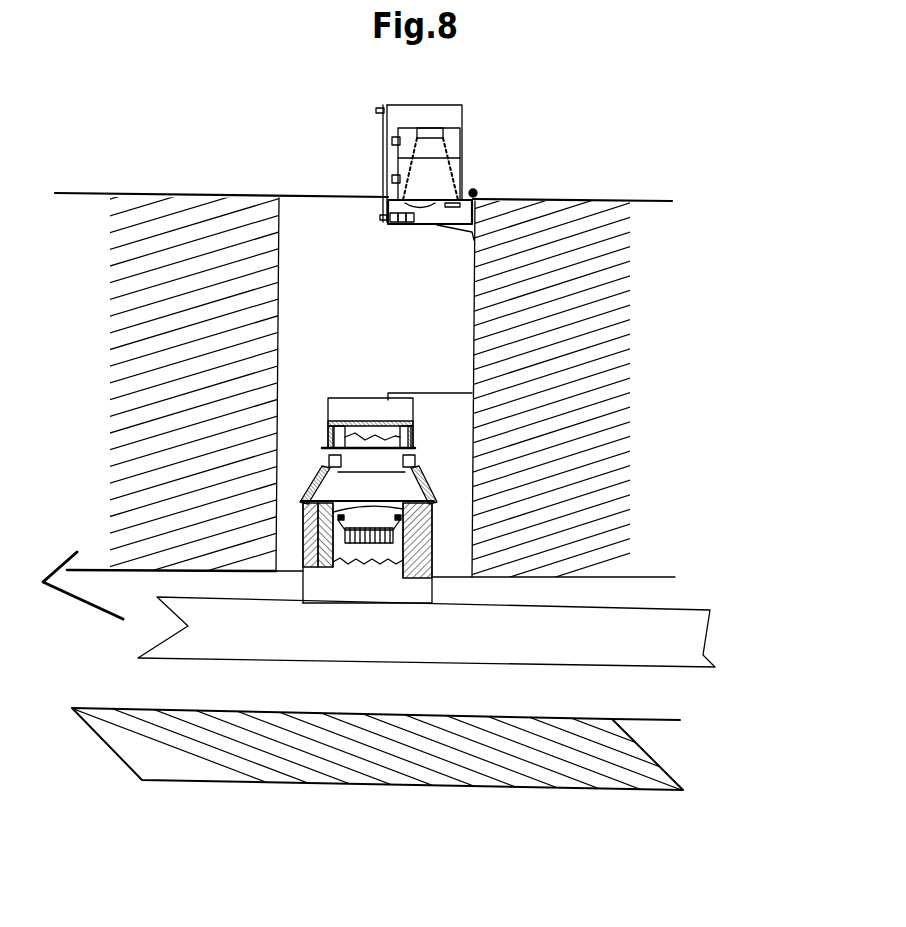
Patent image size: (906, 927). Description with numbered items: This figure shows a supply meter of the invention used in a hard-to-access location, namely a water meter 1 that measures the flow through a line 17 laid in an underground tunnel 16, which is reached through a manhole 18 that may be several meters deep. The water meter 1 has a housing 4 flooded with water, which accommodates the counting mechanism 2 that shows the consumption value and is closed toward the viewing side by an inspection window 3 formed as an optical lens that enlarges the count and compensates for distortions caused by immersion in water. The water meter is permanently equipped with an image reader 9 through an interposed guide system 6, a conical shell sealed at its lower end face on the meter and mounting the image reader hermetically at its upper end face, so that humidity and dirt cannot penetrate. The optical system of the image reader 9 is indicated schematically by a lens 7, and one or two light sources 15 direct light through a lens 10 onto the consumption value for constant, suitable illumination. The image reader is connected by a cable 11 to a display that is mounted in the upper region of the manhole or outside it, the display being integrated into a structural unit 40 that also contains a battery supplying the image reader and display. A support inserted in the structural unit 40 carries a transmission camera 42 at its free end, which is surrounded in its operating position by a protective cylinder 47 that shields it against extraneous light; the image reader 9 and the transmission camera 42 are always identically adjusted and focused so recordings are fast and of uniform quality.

The water meter 1 is at (376, 595).
The counting mechanism 2 is at (429, 553).
The inspection window 3 is at (316, 528).
The housing 4 is at (307, 507).
The guide system 6 is at (539, 460).
The lens 7 is at (350, 443).
The image reader 9 is at (382, 406).
The lens 10 is at (430, 450).
The cable 11 is at (467, 261).
The light source 15 is at (395, 434).
The underground tunnel 16 is at (157, 569).
The line 17 is at (426, 595).
The manhole 18 is at (540, 312).
The structural unit 40 is at (501, 149).
The transmission camera 42 is at (438, 110).
The protective cylinder 47 is at (443, 153).